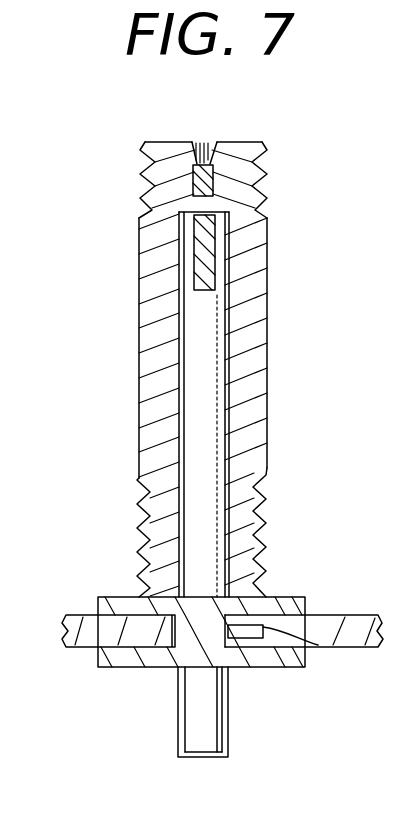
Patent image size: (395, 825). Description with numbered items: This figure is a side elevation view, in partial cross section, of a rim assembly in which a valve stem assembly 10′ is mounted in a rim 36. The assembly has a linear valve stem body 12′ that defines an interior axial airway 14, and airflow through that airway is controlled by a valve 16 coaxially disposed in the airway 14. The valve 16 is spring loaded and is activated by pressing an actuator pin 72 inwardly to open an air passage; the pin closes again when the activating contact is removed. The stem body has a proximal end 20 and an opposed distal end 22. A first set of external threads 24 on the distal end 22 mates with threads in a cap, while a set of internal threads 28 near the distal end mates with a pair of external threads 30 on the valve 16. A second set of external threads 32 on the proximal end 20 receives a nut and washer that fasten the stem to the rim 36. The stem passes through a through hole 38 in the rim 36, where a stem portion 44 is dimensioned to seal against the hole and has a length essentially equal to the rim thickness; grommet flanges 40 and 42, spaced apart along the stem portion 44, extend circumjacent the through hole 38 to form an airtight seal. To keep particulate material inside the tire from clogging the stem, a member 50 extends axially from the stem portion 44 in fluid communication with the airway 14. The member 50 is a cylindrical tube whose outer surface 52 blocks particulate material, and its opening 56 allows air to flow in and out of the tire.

The valve stem assembly 10′ is at (103, 251).
The valve stem body 12′ is at (137, 352).
The interior axial airway 14 is at (208, 352).
The valve 16 is at (190, 147).
The proximal end 20 is at (110, 524).
The distal end 22 is at (113, 176).
The first set of external threads 24 is at (290, 166).
The internal threads 28 is at (232, 150).
The external threads of the valve 30 is at (234, 181).
The second set of external threads 32 is at (262, 513).
The rim 36 is at (366, 615).
The through hole 38 is at (318, 645).
The grommet flange 40 is at (92, 584).
The grommet flange 42 is at (100, 650).
The stem portion 44 is at (268, 613).
The member 50 is at (247, 710).
The outer surface 52 is at (195, 725).
The opening 56 is at (200, 758).
The actuator pin 72 is at (206, 163).